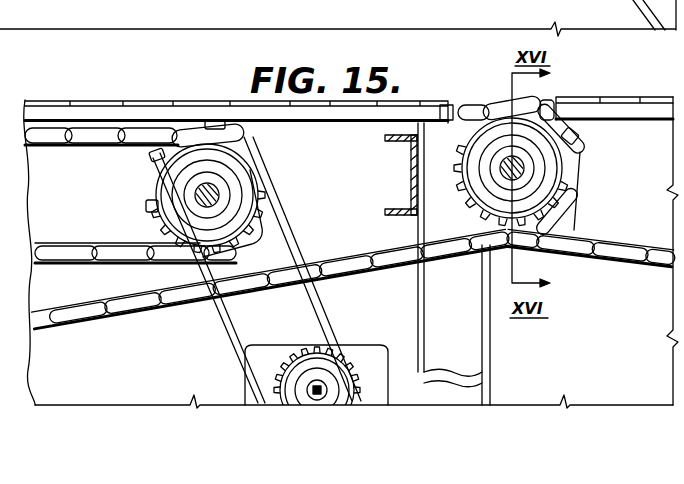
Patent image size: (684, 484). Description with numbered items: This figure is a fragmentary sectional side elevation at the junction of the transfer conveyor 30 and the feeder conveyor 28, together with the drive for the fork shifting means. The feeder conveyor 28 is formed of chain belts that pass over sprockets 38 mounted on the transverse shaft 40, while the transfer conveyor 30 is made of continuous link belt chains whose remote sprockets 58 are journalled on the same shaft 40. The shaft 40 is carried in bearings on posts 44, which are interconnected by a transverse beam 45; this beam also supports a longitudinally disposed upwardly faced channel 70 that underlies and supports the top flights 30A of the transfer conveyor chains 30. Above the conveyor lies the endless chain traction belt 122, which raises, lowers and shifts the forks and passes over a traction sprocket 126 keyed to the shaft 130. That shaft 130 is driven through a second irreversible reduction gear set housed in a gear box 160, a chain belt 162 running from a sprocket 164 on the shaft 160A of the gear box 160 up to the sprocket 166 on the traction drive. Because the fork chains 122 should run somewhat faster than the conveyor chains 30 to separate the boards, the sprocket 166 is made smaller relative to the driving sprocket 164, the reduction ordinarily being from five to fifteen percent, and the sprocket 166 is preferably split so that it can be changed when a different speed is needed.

The feeder conveyor 28 is at (590, 101).
The transfer conveyor 30 is at (295, 276).
The top flights of the transfer conveyor chains 30A is at (227, 103).
The sprockets 38 is at (578, 141).
The transverse shaft 40 is at (525, 168).
The posts 44 is at (462, 336).
The transverse beam 45 is at (411, 174).
The sprockets 58 is at (553, 224).
The channels 70 is at (134, 112).
The endless chain traction belts 122 is at (122, 252).
The traction sprocket 126 is at (156, 158).
The shaft 130 is at (196, 194).
The gear box 160 is at (262, 348).
The shaft of the gear box 160A is at (377, 347).
The chain belt 162 is at (294, 243).
The sprocket 164 is at (300, 380).
The sprocket 166 is at (235, 178).